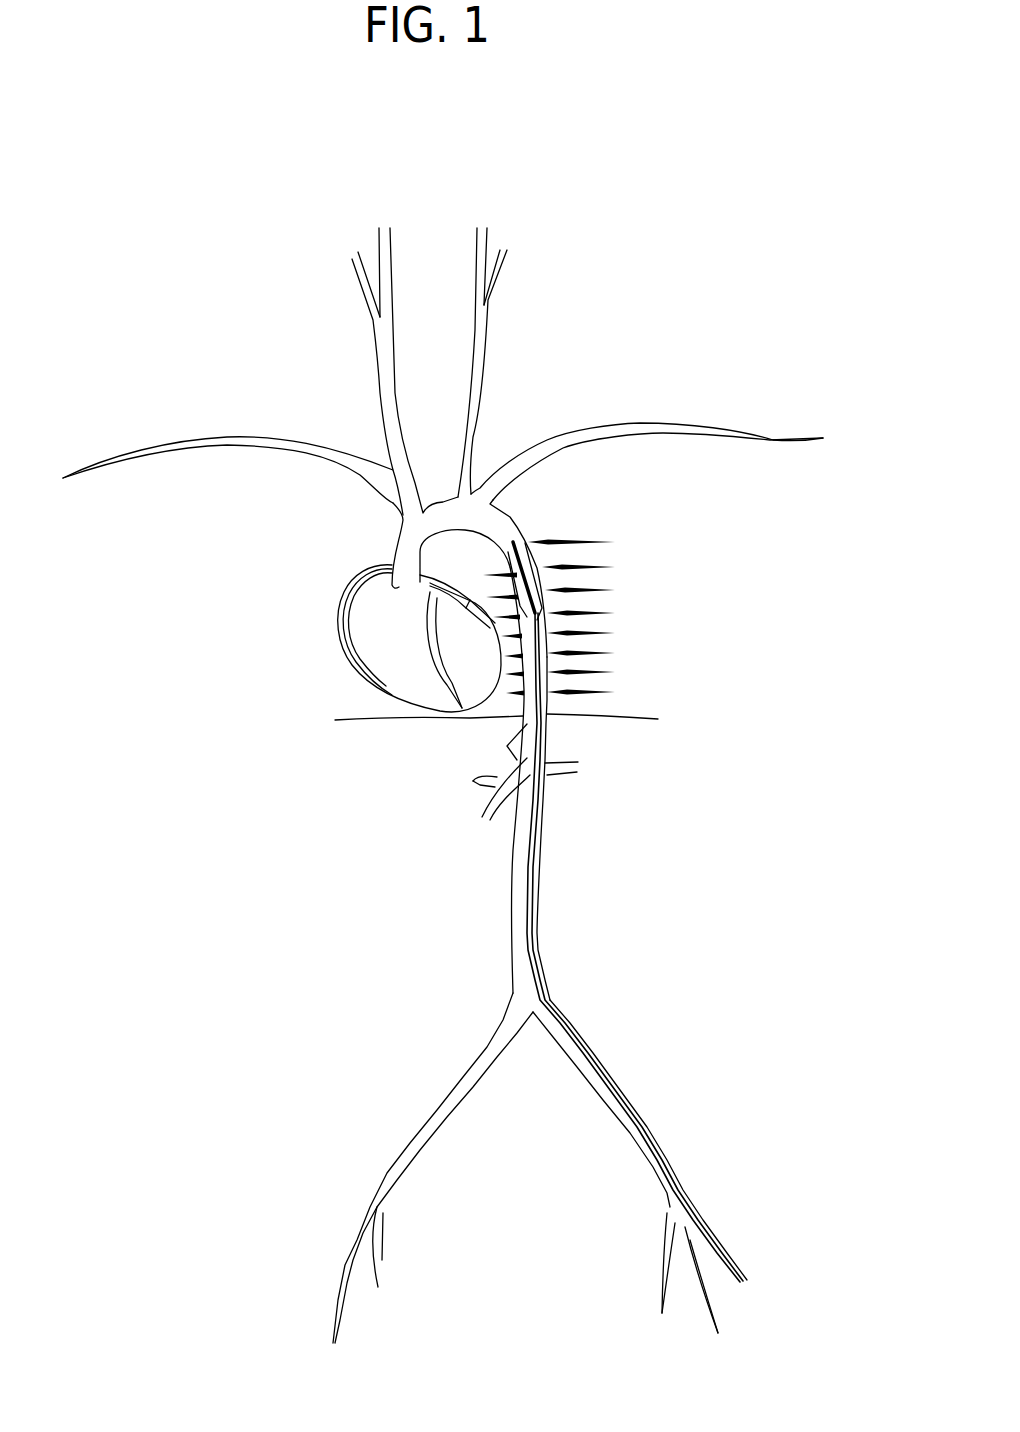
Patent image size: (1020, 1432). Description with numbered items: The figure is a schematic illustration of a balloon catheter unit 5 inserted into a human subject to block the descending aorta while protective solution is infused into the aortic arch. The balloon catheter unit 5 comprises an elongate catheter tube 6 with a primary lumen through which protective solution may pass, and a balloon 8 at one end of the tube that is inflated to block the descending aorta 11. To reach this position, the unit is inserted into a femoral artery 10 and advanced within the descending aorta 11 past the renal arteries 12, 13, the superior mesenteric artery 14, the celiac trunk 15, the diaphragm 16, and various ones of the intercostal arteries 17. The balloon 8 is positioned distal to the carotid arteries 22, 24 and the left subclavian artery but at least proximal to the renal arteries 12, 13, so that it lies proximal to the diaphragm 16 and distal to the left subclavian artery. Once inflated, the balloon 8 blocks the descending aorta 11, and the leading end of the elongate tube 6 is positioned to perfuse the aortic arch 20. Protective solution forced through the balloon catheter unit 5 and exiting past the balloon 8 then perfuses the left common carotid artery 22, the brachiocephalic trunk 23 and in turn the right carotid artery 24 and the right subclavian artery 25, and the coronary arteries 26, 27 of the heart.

The balloon catheter unit 5 is at (725, 1253).
The elongate catheter tube 6 is at (583, 1060).
The balloon 8 is at (537, 590).
The femoral artery 10 is at (668, 1173).
The descending aorta 11 is at (540, 923).
The renal artery 12 is at (562, 775).
The renal artery 13 is at (473, 781).
The superior mesenteric artery 14 is at (508, 772).
The celiac trunk 15 is at (508, 744).
The diaphragm 16 is at (377, 724).
The intercostal arteries 17 is at (610, 528).
The aortic arch 20 is at (514, 515).
The left common carotid artery 22 is at (473, 430).
The brachiocephalic trunk 23 is at (390, 502).
The right carotid artery 24 is at (380, 401).
The right subclavian artery 25 is at (308, 453).
The coronary artery 26 is at (346, 610).
The coronary artery 27 is at (430, 603).